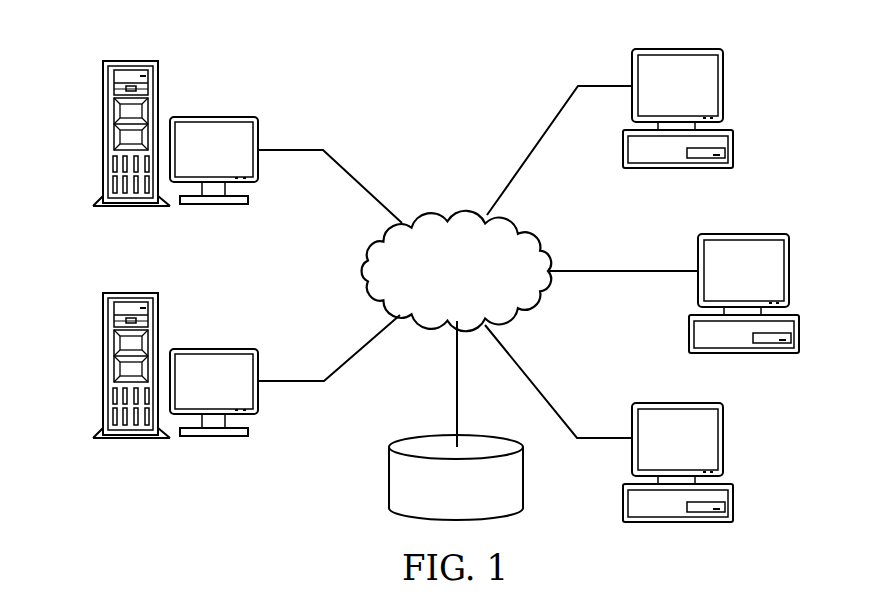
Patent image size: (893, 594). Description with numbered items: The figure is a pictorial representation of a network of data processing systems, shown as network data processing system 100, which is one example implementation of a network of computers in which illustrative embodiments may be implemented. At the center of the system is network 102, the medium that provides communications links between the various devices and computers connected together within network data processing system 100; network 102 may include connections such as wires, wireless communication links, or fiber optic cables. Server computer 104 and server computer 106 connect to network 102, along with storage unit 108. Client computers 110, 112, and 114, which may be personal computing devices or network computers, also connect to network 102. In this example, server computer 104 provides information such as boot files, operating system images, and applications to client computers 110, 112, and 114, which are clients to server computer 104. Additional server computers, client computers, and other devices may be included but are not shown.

The network data processing system 100 is at (326, 62).
The network 102 is at (447, 211).
The server computer 104 is at (102, 364).
The server computer 106 is at (103, 133).
The storage unit 108 is at (389, 482).
The client computer 110 is at (733, 150).
The client computer 112 is at (799, 335).
The client computer 114 is at (733, 505).